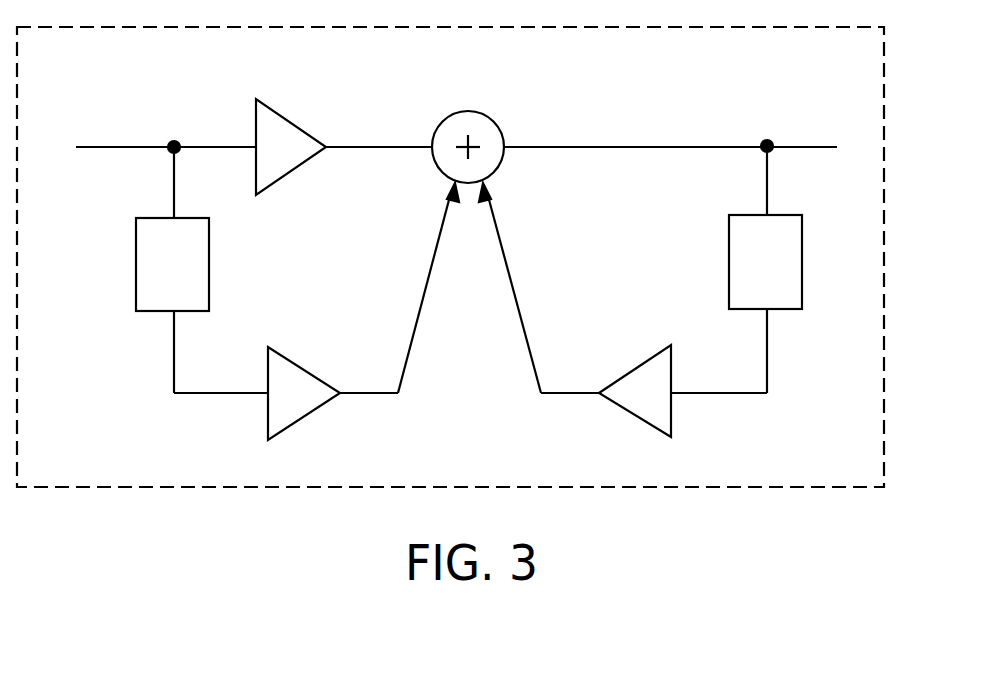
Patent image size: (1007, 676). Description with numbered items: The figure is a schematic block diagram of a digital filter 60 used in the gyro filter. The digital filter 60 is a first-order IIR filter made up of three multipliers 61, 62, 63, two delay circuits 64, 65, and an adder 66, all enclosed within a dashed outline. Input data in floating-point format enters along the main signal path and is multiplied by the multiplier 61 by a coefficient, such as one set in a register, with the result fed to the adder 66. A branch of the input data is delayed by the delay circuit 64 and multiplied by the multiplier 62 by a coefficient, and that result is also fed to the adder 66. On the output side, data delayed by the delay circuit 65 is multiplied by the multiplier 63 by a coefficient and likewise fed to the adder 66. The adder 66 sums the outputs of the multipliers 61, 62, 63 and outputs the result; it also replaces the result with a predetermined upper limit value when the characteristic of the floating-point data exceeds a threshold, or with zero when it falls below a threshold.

The digital filter 60 is at (884, 258).
The multiplier 61 is at (304, 124).
The multiplier 62 is at (304, 368).
The multiplier 63 is at (636, 366).
The delay circuit 64 is at (136, 277).
The delay circuit 65 is at (729, 262).
The adder 66 is at (493, 123).